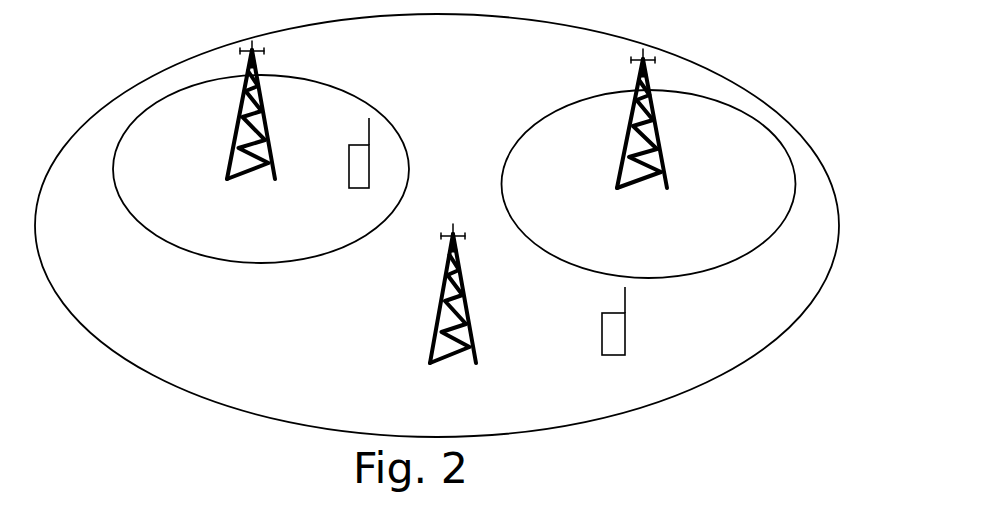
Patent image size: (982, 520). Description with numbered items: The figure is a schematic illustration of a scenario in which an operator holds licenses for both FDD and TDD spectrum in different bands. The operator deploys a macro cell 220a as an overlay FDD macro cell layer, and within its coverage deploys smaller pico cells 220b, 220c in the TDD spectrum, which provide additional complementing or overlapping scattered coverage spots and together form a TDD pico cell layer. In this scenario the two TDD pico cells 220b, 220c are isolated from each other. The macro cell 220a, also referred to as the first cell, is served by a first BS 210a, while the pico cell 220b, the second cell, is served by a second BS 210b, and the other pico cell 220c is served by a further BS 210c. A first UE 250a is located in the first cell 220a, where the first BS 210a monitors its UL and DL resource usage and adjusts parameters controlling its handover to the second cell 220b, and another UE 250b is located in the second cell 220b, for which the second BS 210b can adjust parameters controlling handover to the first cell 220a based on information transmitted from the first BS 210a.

The macro cell 220a is at (342, 388).
The pico cell 220b is at (352, 131).
The pico cell 220c is at (740, 138).
The first BS 210a is at (449, 366).
The second BS 210b is at (250, 181).
The BS 210c is at (641, 190).
The first UE 250a is at (602, 356).
The UE 250b is at (349, 189).